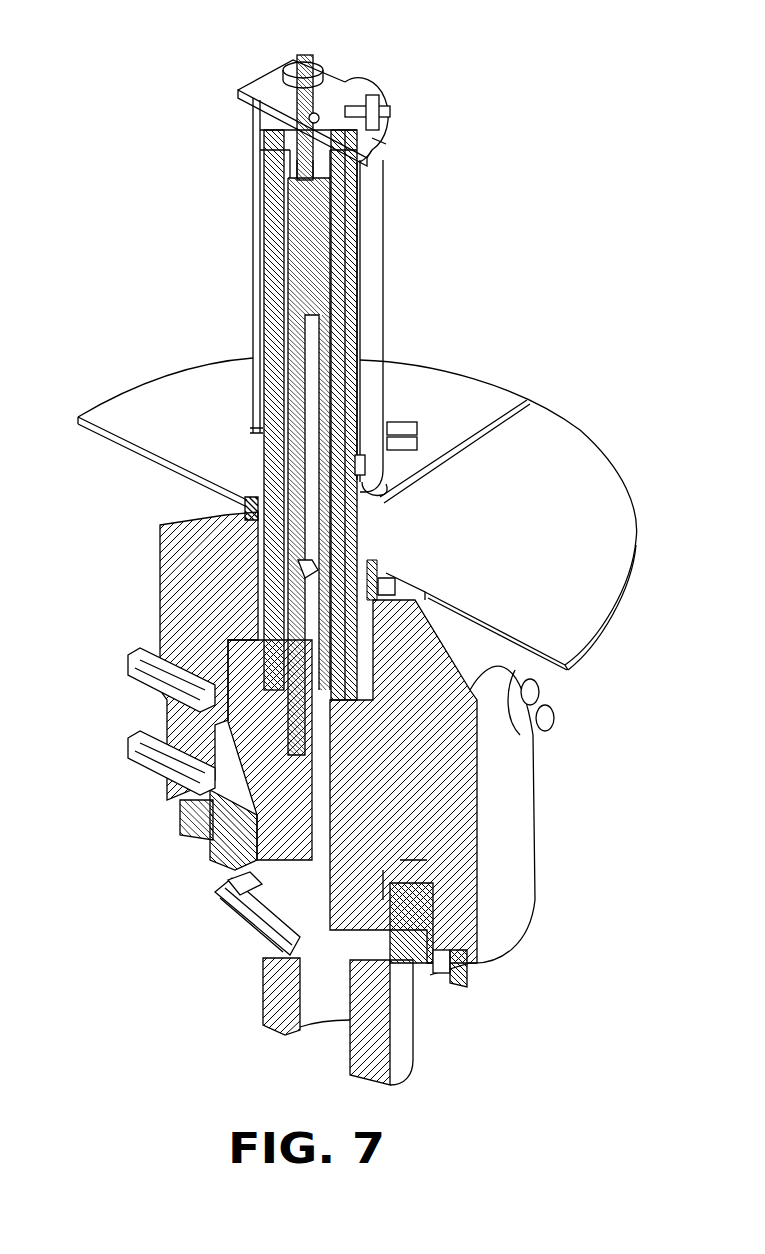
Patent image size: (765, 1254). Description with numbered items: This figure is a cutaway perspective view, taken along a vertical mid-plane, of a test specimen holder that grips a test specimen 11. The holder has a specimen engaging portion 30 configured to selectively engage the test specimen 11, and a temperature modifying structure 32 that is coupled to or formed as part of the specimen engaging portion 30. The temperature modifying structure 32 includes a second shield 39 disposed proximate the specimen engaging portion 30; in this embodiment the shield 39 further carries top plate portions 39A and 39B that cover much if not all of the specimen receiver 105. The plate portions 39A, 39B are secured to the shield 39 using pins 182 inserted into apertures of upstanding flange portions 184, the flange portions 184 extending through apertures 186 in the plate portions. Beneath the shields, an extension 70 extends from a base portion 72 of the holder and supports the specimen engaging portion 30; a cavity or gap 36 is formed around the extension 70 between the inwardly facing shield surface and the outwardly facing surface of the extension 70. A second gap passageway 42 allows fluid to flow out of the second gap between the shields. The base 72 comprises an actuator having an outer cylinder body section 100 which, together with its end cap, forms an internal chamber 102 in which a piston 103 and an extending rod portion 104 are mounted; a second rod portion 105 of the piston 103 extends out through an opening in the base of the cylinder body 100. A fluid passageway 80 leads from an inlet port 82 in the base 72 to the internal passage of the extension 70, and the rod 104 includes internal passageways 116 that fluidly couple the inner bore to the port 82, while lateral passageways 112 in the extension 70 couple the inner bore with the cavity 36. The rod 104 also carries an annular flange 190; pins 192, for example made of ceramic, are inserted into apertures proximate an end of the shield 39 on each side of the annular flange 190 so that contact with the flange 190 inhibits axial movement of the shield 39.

The specimen engaging portion 30 is at (160, 62).
The temperature modifying structure 32 is at (185, 132).
The second shield 39 is at (372, 262).
The top plate portion 39A is at (370, 95).
The top plate portion 39B is at (268, 82).
The test specimen 11 is at (300, 130).
The second rod portion 105 is at (300, 160).
The lateral passageways 112 is at (268, 212).
The rod portion 104 is at (322, 288).
The extension 70 is at (340, 327).
The cavity or gap 36 is at (372, 398).
The pins 192 is at (418, 442).
The second gap passageway 42 is at (255, 422).
The annular flange 190 is at (358, 466).
The internal passageways 116 is at (385, 584).
The base portion 72 is at (600, 752).
The outer cylinder body section 100 is at (537, 820).
The piston 103 is at (385, 884).
The internal chamber 102 is at (410, 893).
The inlet port 82 is at (255, 943).
The fluid passageway 80 is at (360, 935).
The pins 182 is at (380, 104).
The upstanding flange portions 184 is at (365, 93).
The apertures 186 is at (384, 141).